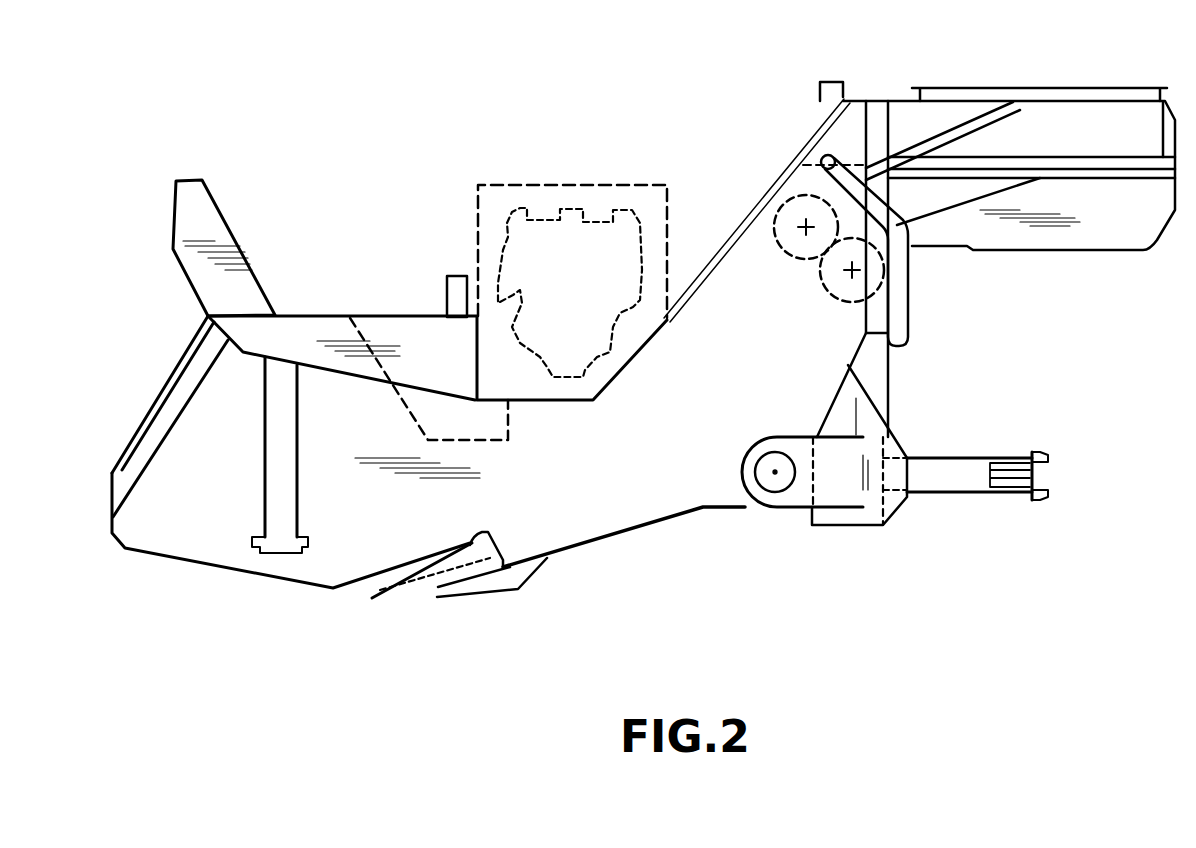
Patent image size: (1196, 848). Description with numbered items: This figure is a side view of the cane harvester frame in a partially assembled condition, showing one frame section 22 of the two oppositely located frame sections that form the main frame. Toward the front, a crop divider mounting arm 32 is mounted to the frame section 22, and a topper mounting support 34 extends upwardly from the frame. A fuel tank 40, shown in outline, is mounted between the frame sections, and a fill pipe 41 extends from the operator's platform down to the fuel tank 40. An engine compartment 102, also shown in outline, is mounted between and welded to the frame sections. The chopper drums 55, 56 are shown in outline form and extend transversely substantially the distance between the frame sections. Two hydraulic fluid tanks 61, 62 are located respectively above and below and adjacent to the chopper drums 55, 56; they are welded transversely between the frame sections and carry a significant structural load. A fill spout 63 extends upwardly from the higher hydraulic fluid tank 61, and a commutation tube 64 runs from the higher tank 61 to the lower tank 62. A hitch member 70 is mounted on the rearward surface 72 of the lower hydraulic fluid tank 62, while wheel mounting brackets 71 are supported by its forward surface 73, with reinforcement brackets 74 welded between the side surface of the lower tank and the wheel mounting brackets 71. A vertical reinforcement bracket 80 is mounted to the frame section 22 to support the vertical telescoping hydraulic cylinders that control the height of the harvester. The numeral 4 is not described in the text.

The vehicle body 4 is at (1160, 242).
The frame section 22 is at (593, 482).
The crop divider mounting arm 32 is at (183, 412).
The topper mounting support 34 is at (215, 202).
The fuel tank 40 is at (510, 421).
The fill pipe 41 is at (450, 274).
The chopper drum 55 is at (788, 205).
The chopper drum 56 is at (868, 318).
The hydraulic fluid tank 61 is at (780, 178).
The hydraulic fluid tank 62 is at (830, 396).
The fill spout 63 is at (842, 82).
The commutation tube 64 is at (908, 262).
The hitch member 70 is at (935, 457).
The wheel mounting bracket 71 is at (742, 466).
The rearward surface 72 is at (888, 373).
The forward surface 73 is at (820, 470).
The reinforcement bracket 74 is at (785, 437).
The vertical reinforcement bracket 80 is at (298, 472).
The engine compartment 102 is at (525, 185).